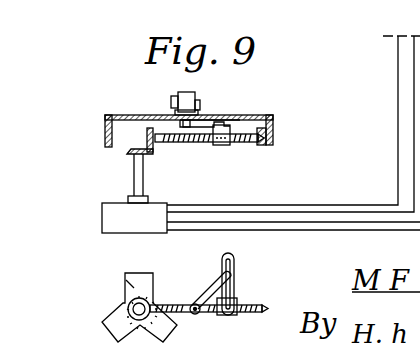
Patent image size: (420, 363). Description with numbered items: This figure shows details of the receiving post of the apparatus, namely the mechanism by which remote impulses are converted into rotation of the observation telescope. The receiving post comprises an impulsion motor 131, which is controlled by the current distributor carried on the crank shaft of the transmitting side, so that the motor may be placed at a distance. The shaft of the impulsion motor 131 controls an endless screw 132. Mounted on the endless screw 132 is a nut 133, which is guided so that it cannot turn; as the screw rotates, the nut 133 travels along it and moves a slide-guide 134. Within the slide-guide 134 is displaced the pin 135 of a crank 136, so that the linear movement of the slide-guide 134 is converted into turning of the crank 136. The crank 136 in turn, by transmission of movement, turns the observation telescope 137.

The impulsion motor 131 is at (135, 283).
The endless screw 132 is at (190, 143).
The nut 133 is at (227, 146).
The slide-guide 134 is at (234, 262).
The pin 135 is at (222, 263).
The crank 136 is at (201, 314).
The observation telescope 137 is at (171, 97).